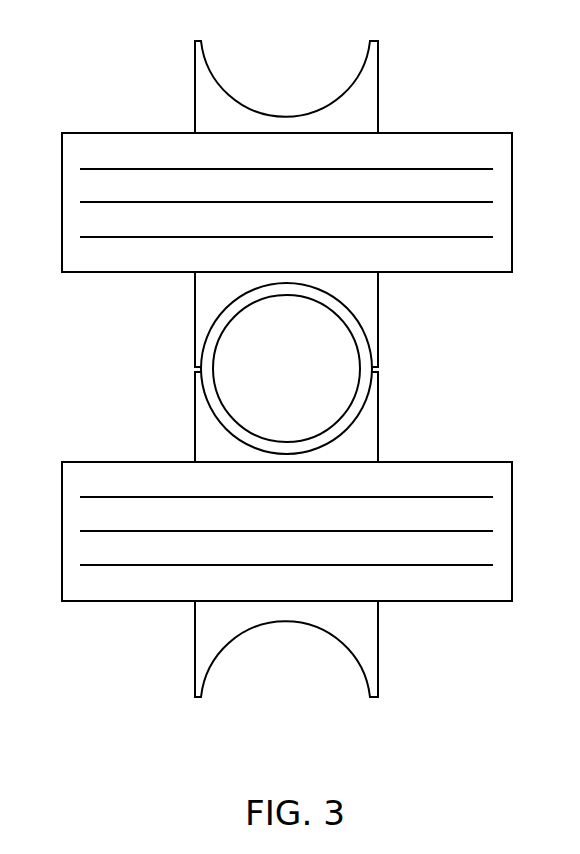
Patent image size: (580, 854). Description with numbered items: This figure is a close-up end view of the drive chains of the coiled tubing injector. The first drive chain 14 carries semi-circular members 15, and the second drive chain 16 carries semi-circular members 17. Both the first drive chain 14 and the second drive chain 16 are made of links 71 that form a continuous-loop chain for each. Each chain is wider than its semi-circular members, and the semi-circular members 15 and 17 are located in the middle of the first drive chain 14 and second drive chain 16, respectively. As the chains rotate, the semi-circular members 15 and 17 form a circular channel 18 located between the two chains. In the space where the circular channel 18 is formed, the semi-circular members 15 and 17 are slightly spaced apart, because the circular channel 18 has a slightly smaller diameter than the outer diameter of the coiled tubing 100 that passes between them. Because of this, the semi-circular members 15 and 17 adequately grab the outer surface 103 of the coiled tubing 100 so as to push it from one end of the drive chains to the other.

The first drive chain 14 is at (490, 147).
The second drive chain 16 is at (490, 515).
The links 71 is at (92, 167).
The semi-circular members 15 is at (202, 82).
The semi-circular members 17 is at (202, 418).
The circular channel 18 is at (210, 327).
The coiled tubing 100 is at (353, 330).
The outer surface 103 is at (365, 403).